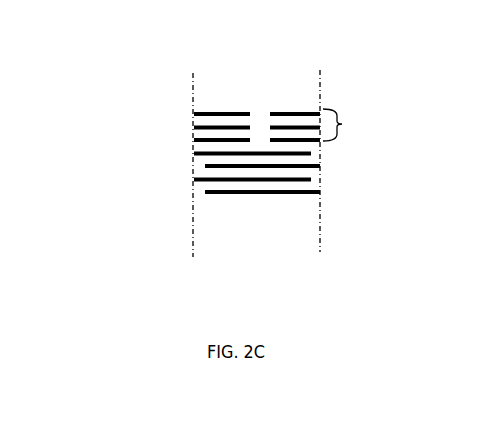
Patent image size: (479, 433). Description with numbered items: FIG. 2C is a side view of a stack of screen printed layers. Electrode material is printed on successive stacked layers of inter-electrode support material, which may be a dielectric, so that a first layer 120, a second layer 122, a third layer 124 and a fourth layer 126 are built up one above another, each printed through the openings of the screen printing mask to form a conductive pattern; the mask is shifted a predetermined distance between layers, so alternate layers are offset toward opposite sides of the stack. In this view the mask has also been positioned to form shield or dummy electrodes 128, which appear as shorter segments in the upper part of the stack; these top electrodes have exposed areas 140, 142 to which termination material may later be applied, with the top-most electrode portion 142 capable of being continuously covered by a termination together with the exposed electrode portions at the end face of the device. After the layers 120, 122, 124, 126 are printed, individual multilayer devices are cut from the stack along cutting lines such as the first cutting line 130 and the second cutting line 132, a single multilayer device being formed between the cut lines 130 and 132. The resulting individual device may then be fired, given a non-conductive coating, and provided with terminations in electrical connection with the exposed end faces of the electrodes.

The first layer 120 is at (331, 192).
The second layer 122 is at (168, 180).
The third layer 124 is at (331, 166).
The fourth layer 126 is at (168, 154).
The shield or dummy electrodes 128 is at (364, 123).
The cutting line 130 is at (193, 223).
The cutting line 132 is at (320, 222).
The exposed area of top electrode 140 is at (232, 113).
The exposed area of top electrode 142 is at (302, 111).